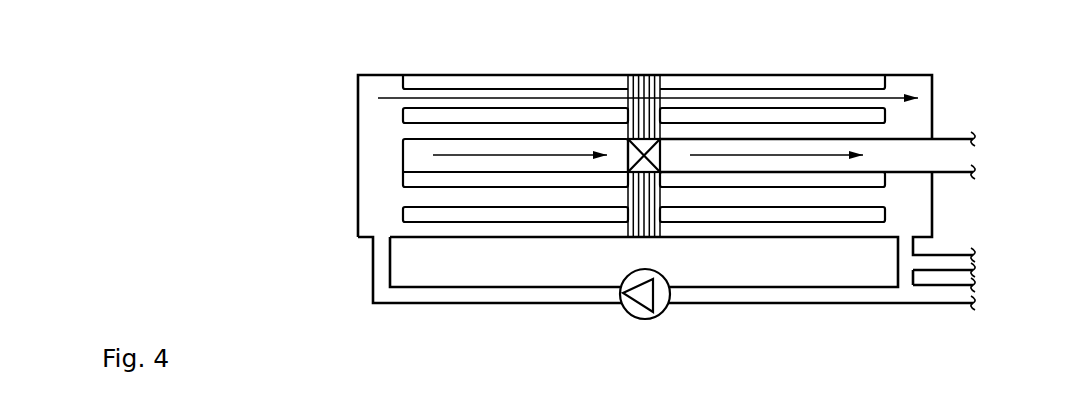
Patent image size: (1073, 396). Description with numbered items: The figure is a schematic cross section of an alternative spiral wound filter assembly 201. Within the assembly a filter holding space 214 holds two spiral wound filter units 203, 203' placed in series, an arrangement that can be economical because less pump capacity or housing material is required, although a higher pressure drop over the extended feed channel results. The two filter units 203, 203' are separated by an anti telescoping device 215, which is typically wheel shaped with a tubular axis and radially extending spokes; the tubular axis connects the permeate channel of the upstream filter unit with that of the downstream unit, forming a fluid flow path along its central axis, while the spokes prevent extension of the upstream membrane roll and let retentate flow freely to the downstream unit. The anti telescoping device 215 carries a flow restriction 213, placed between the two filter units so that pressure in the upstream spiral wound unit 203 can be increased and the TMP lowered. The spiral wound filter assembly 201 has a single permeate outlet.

The spiral wound filter assembly 201 is at (960, 77).
The filter unit 203 is at (515, 121).
The filter unit 203' is at (772, 121).
The flow restriction 213 is at (655, 155).
The filter holding space 214 is at (917, 85).
The anti telescoping device 215 is at (642, 74).